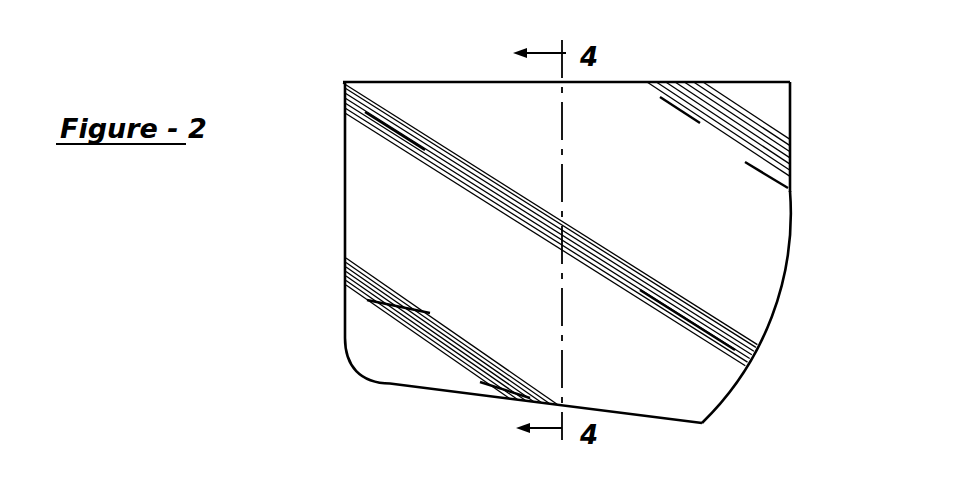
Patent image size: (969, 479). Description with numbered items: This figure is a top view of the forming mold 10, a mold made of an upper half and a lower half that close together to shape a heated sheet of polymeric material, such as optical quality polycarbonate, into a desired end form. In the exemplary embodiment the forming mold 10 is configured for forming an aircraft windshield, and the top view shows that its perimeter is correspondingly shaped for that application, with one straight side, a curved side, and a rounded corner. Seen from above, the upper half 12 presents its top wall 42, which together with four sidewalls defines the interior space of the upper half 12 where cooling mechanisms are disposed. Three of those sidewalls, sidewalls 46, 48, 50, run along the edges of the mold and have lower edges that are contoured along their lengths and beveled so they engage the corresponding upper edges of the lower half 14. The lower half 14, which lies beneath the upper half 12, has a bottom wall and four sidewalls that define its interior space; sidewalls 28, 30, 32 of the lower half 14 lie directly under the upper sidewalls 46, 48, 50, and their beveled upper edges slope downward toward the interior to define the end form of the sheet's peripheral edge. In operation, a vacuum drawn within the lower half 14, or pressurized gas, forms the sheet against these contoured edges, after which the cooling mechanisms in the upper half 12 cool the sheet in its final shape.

The forming mold 10 is at (333, 222).
The upper half 12 is at (781, 308).
The lower half 14 is at (733, 388).
The sidewall 28 is at (482, 396).
The sidewall 30 is at (791, 125).
The sidewall 32 is at (638, 81).
The top wall 42 is at (390, 364).
The sidewall 46 is at (390, 364).
The sidewall 48 is at (838, 137).
The sidewall 50 is at (714, 116).